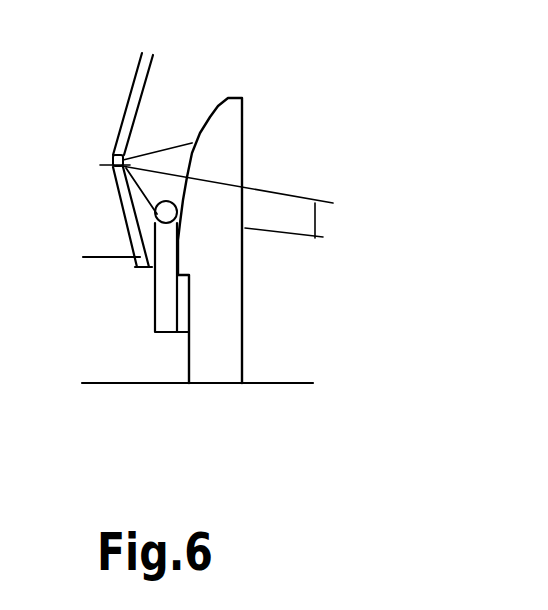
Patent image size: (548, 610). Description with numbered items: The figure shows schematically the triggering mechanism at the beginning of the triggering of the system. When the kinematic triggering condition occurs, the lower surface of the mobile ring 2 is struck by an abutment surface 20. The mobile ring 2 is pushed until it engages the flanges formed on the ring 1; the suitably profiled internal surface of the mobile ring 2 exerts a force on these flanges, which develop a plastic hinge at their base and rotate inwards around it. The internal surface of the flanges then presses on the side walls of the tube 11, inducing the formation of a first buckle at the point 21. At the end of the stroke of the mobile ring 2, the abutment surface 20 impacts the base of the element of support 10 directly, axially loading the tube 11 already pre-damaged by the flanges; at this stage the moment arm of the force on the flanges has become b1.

The ring 1 is at (160, 294).
The mobile ring 2 is at (231, 300).
The element of support 10 is at (128, 365).
The tube 11 is at (148, 70).
The abutment surface 20 is at (297, 383).
The point 21 is at (114, 162).
The moment arm b1 is at (235, 204).